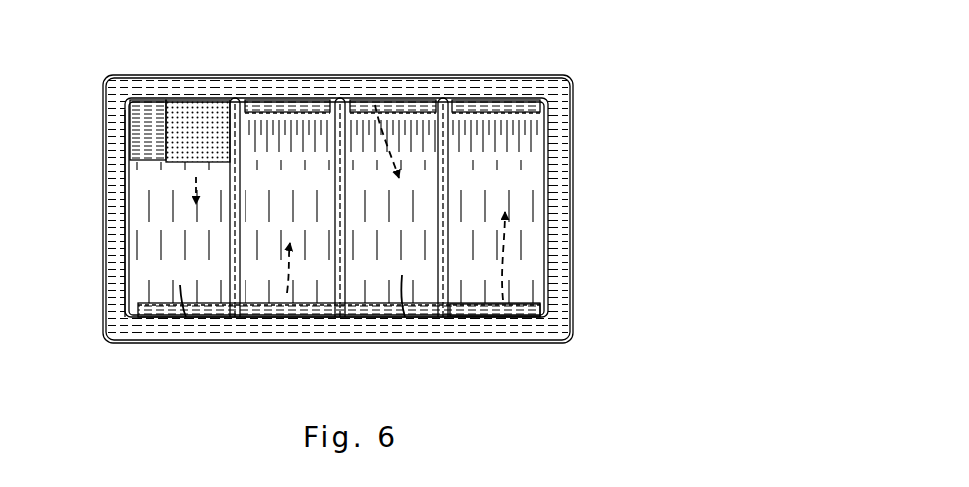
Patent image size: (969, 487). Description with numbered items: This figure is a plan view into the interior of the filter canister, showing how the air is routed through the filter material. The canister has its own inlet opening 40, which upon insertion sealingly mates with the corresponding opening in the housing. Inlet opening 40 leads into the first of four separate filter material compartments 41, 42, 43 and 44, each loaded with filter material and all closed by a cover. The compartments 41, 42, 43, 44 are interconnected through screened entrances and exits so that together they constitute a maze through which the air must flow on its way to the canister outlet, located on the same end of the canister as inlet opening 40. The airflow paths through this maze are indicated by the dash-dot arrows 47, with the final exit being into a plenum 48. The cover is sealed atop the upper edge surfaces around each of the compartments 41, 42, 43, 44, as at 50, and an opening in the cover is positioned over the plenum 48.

The inlet opening 40 is at (178, 108).
The filter material compartment 41 is at (160, 267).
The filter material compartment 42 is at (307, 170).
The filter material compartment 43 is at (377, 275).
The filter material compartment 44 is at (522, 293).
The dash-dot arrows 47 is at (192, 203).
The plenum 48 is at (472, 107).
The cover seal 50 is at (343, 152).